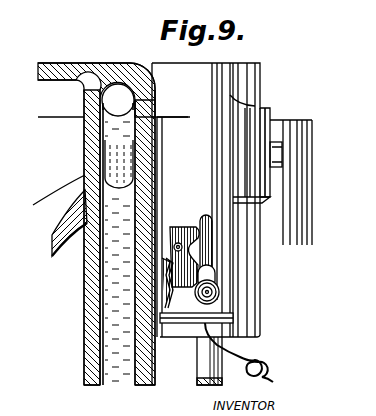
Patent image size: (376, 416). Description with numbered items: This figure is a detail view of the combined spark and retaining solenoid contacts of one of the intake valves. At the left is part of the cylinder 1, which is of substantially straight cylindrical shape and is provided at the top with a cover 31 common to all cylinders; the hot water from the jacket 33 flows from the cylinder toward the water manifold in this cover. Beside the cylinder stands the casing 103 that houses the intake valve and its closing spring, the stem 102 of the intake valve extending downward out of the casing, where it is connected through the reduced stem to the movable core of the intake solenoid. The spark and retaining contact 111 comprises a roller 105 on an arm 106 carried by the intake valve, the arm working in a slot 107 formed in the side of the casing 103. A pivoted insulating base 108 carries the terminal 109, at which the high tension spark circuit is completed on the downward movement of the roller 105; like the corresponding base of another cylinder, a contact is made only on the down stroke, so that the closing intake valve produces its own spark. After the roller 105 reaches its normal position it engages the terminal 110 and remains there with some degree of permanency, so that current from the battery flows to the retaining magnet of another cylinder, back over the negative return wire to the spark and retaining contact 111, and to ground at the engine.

The cylinder 1 is at (86, 365).
The cover 31 is at (60, 72).
The jacket 33 is at (113, 140).
The stem 102 is at (207, 367).
The casing 103 is at (256, 90).
The roller 105 is at (219, 292).
The arm 106 is at (210, 275).
The slot 107 is at (212, 230).
The pivoted insulating base 108 is at (172, 236).
The terminal 109 is at (165, 260).
The terminal 110 is at (237, 310).
The spark and retaining contact 111 is at (212, 263).